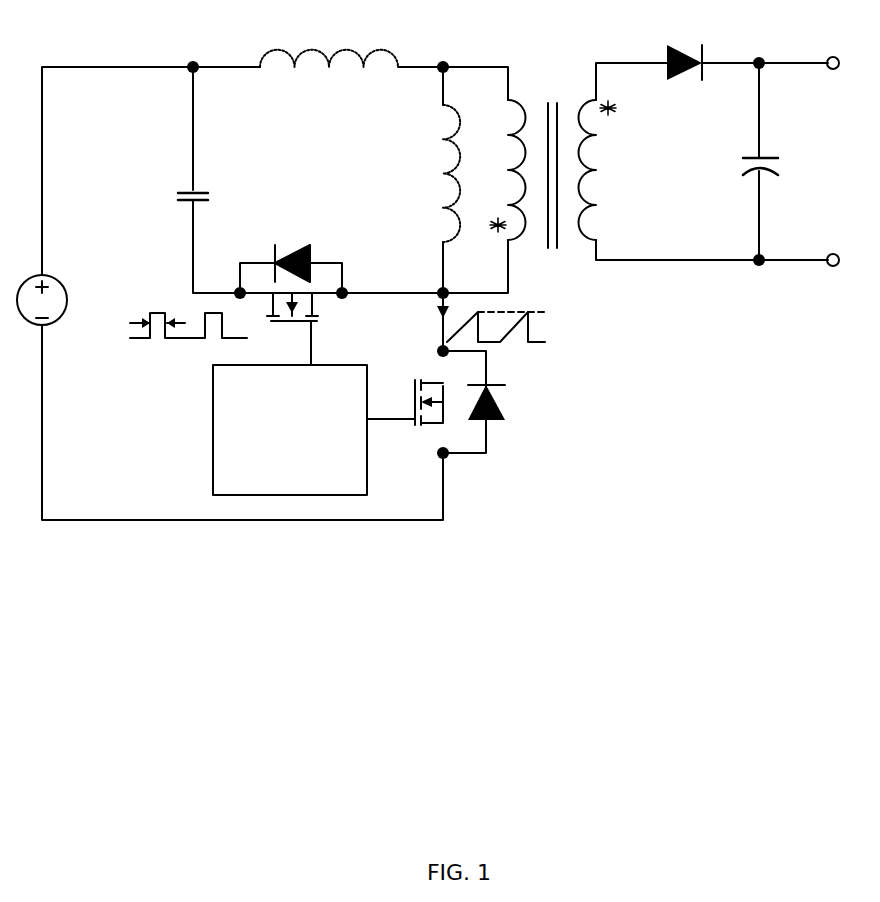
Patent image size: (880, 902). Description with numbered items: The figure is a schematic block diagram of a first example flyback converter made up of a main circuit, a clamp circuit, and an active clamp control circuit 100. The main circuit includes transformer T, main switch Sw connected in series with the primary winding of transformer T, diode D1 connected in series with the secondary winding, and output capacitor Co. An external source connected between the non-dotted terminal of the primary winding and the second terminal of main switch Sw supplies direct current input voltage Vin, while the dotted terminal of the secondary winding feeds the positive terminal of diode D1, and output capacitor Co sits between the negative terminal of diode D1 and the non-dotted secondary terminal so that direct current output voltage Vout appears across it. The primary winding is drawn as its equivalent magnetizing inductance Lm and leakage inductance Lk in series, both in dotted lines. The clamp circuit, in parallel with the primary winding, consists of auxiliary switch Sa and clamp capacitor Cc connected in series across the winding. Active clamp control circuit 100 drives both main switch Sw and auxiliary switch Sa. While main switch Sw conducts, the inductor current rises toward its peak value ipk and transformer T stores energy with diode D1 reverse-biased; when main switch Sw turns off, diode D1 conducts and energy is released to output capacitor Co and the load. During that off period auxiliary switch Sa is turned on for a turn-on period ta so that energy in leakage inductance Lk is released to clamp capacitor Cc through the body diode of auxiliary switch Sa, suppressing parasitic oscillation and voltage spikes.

The active clamp control circuit 100 is at (272, 444).
The direct current input voltage Vin is at (55, 288).
The clamp capacitor Cc is at (205, 186).
The leakage inductance Lk is at (329, 71).
The magnetizing inductance Lm is at (427, 173).
The auxiliary switch Sa is at (274, 285).
The turn-on period of the auxiliary switch ta is at (188, 312).
The main switch Sw is at (452, 402).
The peak value of the inductor current ipk is at (497, 315).
The transformer T is at (553, 158).
The diode D1 is at (663, 58).
The output capacitor Co is at (742, 171).
The direct current output voltage Vout is at (830, 161).